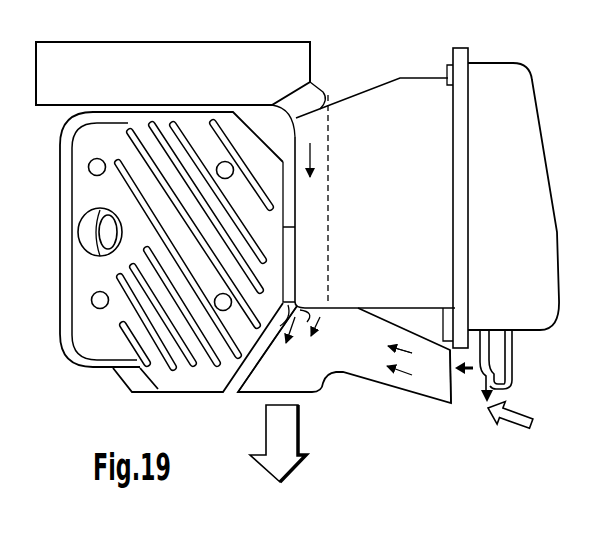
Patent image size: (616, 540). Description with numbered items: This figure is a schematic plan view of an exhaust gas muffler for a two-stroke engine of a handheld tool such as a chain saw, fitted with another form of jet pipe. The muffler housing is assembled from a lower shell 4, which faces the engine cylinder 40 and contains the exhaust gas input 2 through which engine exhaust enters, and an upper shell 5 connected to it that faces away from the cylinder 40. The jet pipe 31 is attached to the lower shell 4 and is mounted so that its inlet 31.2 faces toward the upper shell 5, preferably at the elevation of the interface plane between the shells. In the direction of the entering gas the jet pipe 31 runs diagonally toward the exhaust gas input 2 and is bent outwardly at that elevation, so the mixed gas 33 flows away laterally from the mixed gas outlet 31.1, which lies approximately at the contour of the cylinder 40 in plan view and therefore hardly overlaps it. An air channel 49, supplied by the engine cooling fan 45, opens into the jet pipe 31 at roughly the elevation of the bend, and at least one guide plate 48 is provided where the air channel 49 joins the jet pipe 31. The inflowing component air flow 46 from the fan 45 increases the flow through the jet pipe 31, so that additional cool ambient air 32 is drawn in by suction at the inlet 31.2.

The exhaust gas input 2 is at (288, 252).
The lower shell 4 is at (396, 220).
The upper shell 5 is at (512, 216).
The jet pipe 31 is at (352, 357).
The mixed gas outlet 31.1 is at (252, 392).
The inlet 31.2 is at (458, 398).
The cool ambient air 32 is at (521, 409).
The mixed gas 33 is at (285, 428).
The engine cylinder 40 is at (60, 281).
The fan 45 is at (182, 88).
The component air flow 46 is at (312, 146).
The guide plate 48 is at (304, 306).
The air channel 49 is at (316, 96).